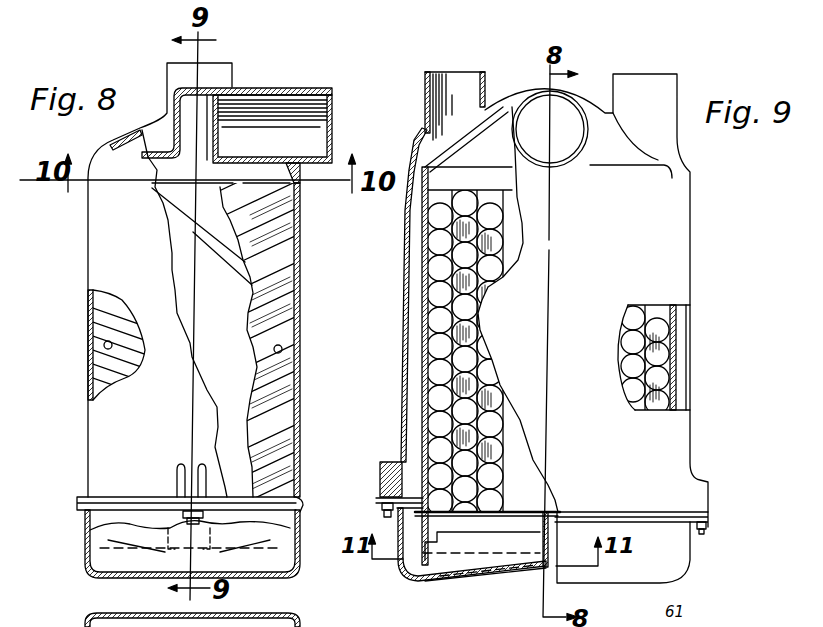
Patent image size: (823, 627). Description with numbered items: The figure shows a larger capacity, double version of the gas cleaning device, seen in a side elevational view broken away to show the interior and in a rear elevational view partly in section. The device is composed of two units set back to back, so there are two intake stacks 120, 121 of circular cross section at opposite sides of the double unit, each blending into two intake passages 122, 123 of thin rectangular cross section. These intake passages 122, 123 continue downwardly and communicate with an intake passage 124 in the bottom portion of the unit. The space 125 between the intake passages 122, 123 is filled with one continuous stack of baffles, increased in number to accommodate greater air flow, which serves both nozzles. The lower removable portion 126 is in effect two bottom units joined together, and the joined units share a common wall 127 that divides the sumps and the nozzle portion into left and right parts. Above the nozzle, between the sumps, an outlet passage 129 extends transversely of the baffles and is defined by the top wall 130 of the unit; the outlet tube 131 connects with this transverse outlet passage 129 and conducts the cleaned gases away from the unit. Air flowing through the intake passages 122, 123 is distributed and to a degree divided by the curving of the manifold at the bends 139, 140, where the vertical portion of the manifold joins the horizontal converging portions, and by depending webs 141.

In FIG. 8, the intake stack 120 is at (223, 72).
In FIG. 9, the intake stack 120 is at (660, 88).
In FIG. 9, the intake stack 121 is at (450, 88).
In FIG. 8, the intake passage 122 is at (256, 626).
In FIG. 9, the intake passage 122 is at (678, 332).
In FIG. 9, the intake passage 123 is at (410, 310).
In FIG. 9, the intake passage in bottom portion 124 is at (400, 562).
In FIG. 8, the space between intake passages 125 is at (226, 327).
In FIG. 9, the space between intake passages 125 is at (437, 368).
In FIG. 9, the lower removable portion 126 is at (468, 583).
In FIG. 9, the common wall 127 is at (538, 545).
In FIG. 8, the outlet passage 129 is at (190, 150).
In FIG. 8, the top wall 130 is at (157, 150).
In FIG. 8, the outlet tube 131 is at (290, 108).
In FIG. 9, the outlet tube 131 is at (535, 107).
In FIG. 8, the bend 139 is at (190, 494).
In FIG. 9, the bend 139 is at (420, 580).
In FIG. 8, the bend 140 is at (192, 544).
In FIG. 9, the bend 140 is at (685, 584).
In FIG. 8, the depending web 141 is at (165, 561).
In FIG. 9, the depending web 141 is at (410, 575).